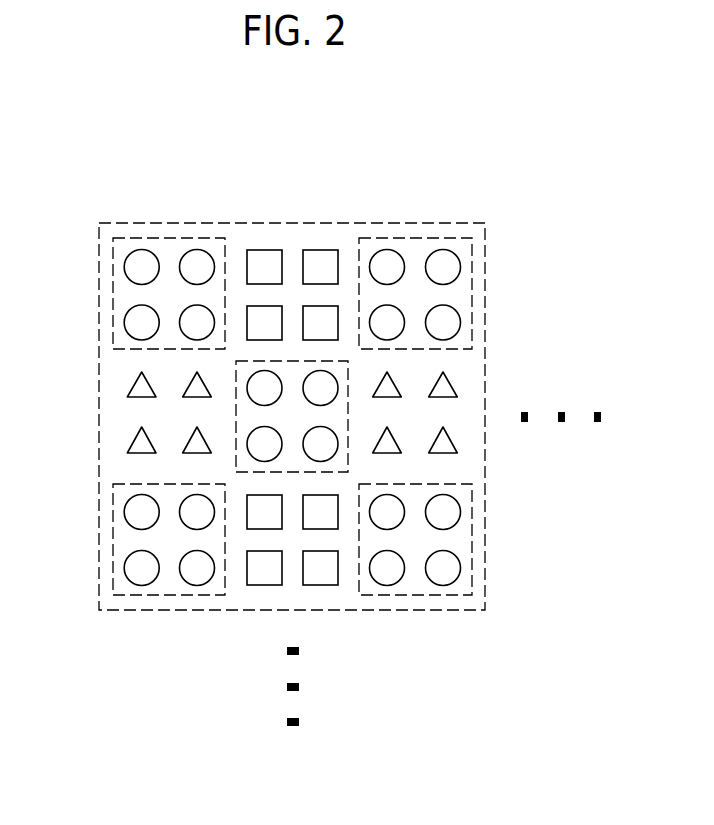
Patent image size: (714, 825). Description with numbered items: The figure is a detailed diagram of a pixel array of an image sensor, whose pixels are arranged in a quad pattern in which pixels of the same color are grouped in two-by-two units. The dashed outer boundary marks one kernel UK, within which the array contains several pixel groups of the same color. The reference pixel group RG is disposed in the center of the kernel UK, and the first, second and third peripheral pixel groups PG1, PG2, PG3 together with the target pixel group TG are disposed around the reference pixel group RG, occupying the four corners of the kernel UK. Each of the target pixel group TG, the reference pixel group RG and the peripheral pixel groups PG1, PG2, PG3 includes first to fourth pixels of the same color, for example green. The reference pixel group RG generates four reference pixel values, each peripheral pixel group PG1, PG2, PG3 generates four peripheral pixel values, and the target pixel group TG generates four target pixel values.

The kernel UK is at (447, 223).
The first peripheral pixel group PG1 is at (113, 285).
The second peripheral pixel group PG2 is at (472, 285).
The third peripheral pixel group PG3 is at (113, 552).
The reference pixel group RG is at (236, 408).
The target pixel group TG is at (472, 549).